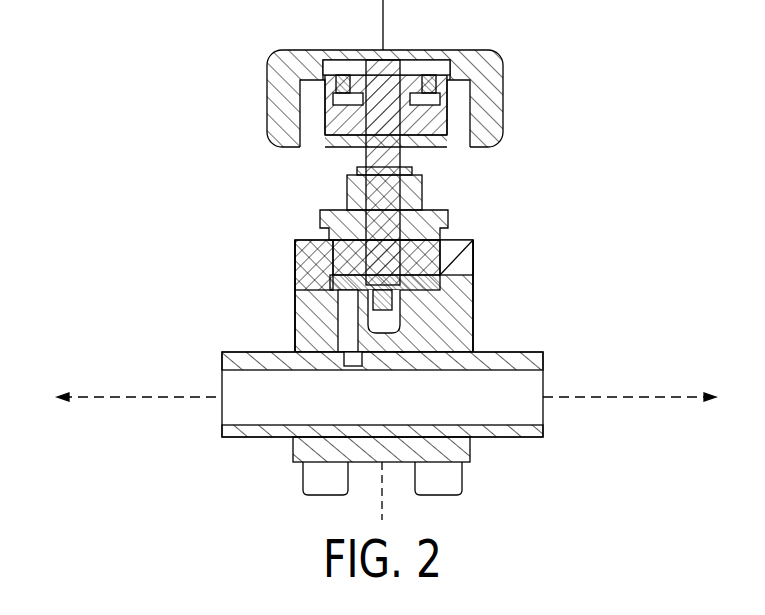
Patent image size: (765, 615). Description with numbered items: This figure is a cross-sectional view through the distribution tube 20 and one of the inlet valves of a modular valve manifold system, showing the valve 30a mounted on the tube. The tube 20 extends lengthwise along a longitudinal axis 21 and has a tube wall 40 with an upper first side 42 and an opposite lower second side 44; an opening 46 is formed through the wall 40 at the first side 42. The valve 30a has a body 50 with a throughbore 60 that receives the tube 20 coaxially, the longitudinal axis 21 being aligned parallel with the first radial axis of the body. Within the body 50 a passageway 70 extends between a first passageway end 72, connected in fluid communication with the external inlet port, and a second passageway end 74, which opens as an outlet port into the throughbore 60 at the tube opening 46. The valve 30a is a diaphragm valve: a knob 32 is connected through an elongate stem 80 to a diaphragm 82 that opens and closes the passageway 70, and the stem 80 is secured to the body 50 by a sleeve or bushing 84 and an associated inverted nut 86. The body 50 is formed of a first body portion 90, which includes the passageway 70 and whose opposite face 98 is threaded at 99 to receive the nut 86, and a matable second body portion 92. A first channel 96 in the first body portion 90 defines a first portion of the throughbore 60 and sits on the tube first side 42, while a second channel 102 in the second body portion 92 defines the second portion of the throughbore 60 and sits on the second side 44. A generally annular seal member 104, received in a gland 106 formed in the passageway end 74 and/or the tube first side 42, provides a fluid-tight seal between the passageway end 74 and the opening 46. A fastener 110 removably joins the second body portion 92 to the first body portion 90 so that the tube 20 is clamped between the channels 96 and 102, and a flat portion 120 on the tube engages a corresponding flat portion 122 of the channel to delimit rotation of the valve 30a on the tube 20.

The distribution tube 20 is at (386, 279).
The longitudinal axis 21 is at (548, 397).
The valve 30a is at (447, 90).
The knob 32 is at (503, 74).
The tube wall 40 is at (365, 388).
The first side 42 is at (503, 352).
The second side 44 is at (520, 437).
The opening 46 is at (344, 370).
The body 50 is at (403, 253).
The throughbore 60 is at (417, 404).
The passageway 70 is at (345, 334).
The first passageway end 72 is at (340, 302).
The second passageway end 74 is at (330, 354).
The stem 80 is at (400, 157).
The diaphragm 82 is at (440, 282).
The bushing 84 is at (347, 186).
The inverted nut 86 is at (320, 226).
The first body portion 90 is at (475, 262).
The second body portion 92 is at (298, 456).
The first channel 96 is at (222, 370).
The opposite face 98 is at (472, 240).
The threads 99 is at (318, 263).
The second channel 102 is at (298, 430).
The seal member 104 is at (352, 364).
The gland 106 is at (385, 336).
The fastener 110 is at (452, 495).
The tube flat portion 120 is at (222, 440).
The channel flat portion 122 is at (468, 434).